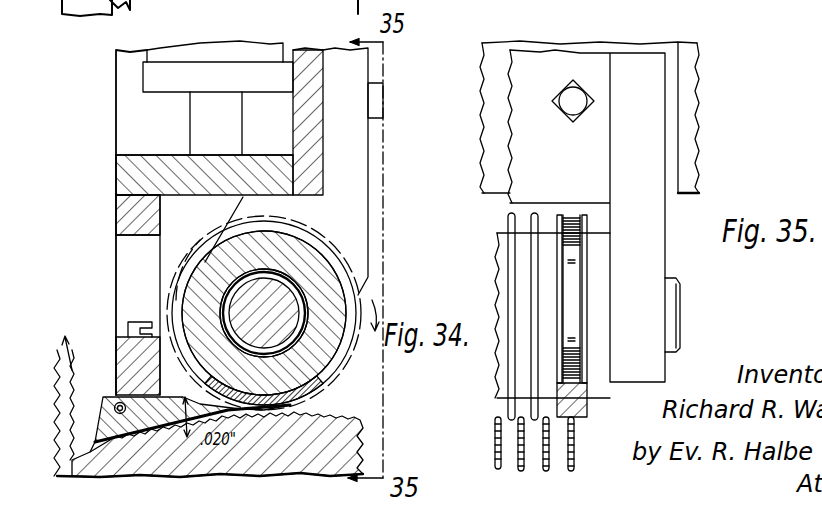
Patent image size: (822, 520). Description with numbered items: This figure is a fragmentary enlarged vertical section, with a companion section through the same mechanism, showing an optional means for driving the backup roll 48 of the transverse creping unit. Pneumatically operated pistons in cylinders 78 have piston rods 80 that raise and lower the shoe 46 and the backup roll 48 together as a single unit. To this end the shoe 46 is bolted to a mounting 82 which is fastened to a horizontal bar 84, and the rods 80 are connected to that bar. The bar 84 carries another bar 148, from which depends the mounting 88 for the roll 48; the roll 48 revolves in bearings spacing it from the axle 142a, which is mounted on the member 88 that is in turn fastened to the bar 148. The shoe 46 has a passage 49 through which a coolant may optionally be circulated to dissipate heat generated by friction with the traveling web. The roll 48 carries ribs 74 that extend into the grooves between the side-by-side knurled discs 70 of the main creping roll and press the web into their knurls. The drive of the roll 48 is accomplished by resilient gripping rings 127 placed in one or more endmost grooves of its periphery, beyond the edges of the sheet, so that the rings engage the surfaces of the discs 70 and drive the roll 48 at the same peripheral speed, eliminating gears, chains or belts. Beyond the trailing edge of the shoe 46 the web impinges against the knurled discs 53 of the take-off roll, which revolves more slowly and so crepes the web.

In FIG. 34, the cylinders 78 is at (181, 47).
In FIG. 34, the piston rods 80 is at (189, 116).
In FIG. 34, the horizontal bar 84 is at (260, 157).
In FIG. 34, the bar 148 is at (310, 150).
In FIG. 35, the bar 148 is at (482, 114).
In FIG. 34, the mounting 88 is at (368, 188).
In FIG. 35, the mounting 88 is at (652, 253).
In FIG. 34, the backup roll 48 is at (336, 233).
In FIG. 35, the backup roll 48 is at (495, 245).
In FIG. 34, the ribs 74 is at (338, 254).
In FIG. 35, the ribs 74 is at (535, 216).
In FIG. 34, the axle 142a is at (281, 310).
In FIG. 35, the axle 142a is at (670, 310).
In FIG. 34, the resilient gripping rings 127 is at (312, 393).
In FIG. 35, the resilient gripping rings 127 is at (573, 232).
In FIG. 34, the mounting 82 is at (118, 320).
In FIG. 34, the shoe 46 is at (103, 405).
In FIG. 34, the passage 49 is at (124, 414).
In FIG. 34, the knurled discs 70 is at (276, 450).
In FIG. 35, the knurled discs 70 is at (513, 451).
In FIG. 34, the discs 53 is at (63, 447).